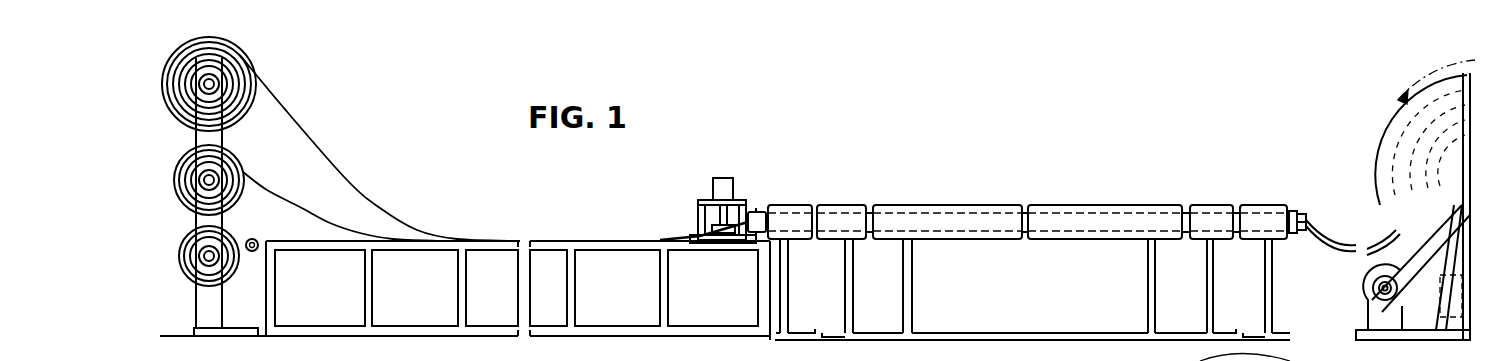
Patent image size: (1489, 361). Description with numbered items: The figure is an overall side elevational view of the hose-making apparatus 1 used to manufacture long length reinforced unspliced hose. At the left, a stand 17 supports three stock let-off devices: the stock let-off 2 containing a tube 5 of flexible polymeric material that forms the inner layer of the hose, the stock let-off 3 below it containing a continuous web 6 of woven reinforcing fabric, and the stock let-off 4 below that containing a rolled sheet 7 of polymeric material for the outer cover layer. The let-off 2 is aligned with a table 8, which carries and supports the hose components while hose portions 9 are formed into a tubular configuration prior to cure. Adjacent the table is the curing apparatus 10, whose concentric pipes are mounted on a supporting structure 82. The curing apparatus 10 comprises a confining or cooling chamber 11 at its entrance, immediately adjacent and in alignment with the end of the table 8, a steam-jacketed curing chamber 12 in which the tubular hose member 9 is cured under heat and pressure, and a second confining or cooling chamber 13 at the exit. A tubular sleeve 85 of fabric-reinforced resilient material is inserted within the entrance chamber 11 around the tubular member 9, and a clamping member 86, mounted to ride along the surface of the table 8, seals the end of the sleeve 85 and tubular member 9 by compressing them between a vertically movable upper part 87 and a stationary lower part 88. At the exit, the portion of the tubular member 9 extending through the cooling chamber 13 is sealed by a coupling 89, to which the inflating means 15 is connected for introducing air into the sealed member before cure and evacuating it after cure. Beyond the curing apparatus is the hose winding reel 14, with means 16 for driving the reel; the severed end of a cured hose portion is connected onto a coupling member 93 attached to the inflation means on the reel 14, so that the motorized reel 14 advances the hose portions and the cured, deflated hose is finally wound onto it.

The hose-making apparatus 1 is at (800, 202).
The stock let-off 2 is at (243, 58).
The stock let-off 3 is at (232, 166).
The stock let-off 4 is at (225, 246).
The tube 5 is at (287, 106).
The web 6 is at (270, 190).
The sheet 7 is at (253, 253).
The table 8 is at (533, 250).
The hose portion 9 is at (690, 238).
The curing apparatus 10 is at (958, 205).
The confining or cooling chamber 11 is at (800, 205).
The curing chamber 12 is at (1040, 205).
The confining or cooling chamber 13 is at (1244, 205).
The hose winding reel 14 is at (1432, 260).
The inflating means 15 is at (1340, 252).
The reel driving means 16 is at (1368, 310).
The stand 17 is at (186, 303).
The supporting structure 82 is at (912, 292).
The tubular sleeve 85 is at (754, 216).
The clamping member 86 is at (711, 196).
The upper part 87 is at (740, 198).
The lower part 88 is at (722, 246).
The coupling 89 is at (1308, 212).
The coupling member 93 is at (1440, 158).